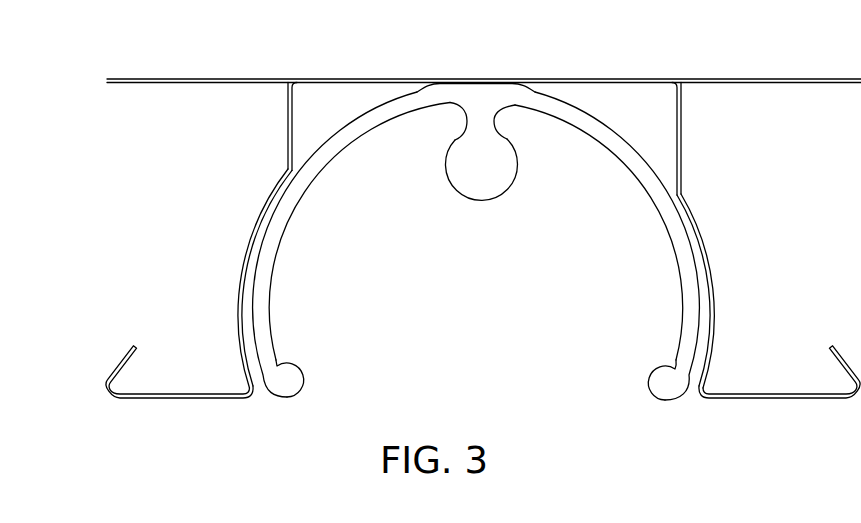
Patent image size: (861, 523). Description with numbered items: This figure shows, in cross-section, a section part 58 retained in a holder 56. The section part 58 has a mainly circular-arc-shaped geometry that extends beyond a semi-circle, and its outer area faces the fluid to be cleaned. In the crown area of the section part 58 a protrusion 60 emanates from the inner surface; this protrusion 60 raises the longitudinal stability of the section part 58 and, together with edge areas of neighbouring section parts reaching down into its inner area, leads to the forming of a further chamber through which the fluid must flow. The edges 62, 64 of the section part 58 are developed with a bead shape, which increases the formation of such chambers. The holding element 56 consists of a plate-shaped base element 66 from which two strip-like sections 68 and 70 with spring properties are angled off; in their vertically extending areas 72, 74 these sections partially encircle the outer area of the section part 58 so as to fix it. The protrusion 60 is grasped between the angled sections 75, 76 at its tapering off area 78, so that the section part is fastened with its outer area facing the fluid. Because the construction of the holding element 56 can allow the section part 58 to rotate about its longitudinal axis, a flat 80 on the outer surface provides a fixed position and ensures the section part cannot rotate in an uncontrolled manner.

The holder 56 is at (483, 237).
The section part 58 is at (476, 237).
The protrusion 60 is at (488, 201).
The edge of section part 62 is at (301, 393).
The edge of section part 64 is at (674, 401).
The plate-shaped base element 66 is at (208, 78).
The strip-like section 68 is at (287, 153).
The strip-like section 70 is at (682, 144).
The vertically extending area 72 is at (240, 281).
The vertically extending area 74 is at (712, 282).
The angled section 75 is at (172, 398).
The angled section 76 is at (840, 398).
The tapering off area 78 is at (498, 114).
The flat 80 is at (490, 78).